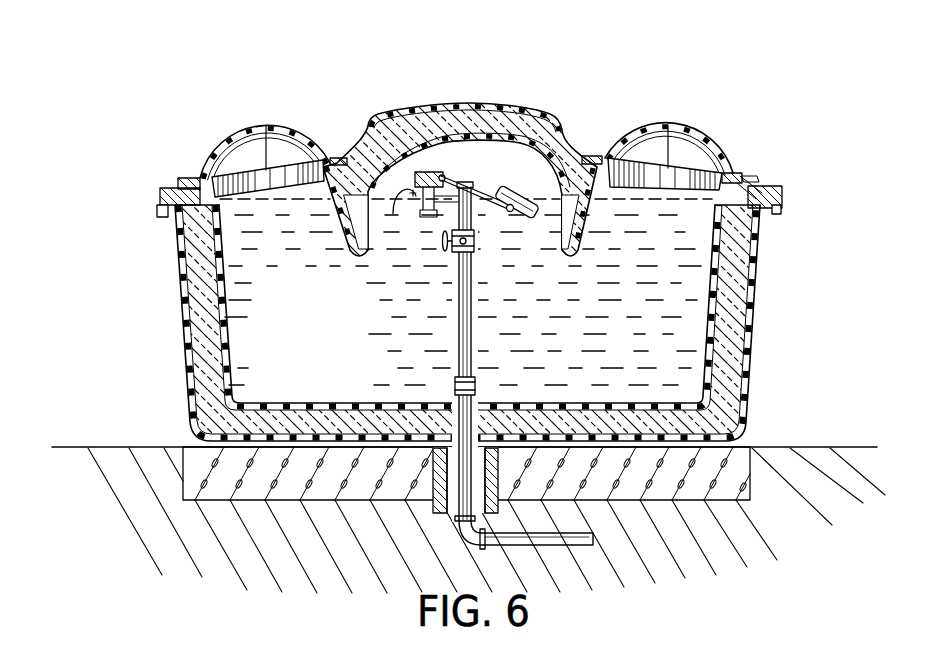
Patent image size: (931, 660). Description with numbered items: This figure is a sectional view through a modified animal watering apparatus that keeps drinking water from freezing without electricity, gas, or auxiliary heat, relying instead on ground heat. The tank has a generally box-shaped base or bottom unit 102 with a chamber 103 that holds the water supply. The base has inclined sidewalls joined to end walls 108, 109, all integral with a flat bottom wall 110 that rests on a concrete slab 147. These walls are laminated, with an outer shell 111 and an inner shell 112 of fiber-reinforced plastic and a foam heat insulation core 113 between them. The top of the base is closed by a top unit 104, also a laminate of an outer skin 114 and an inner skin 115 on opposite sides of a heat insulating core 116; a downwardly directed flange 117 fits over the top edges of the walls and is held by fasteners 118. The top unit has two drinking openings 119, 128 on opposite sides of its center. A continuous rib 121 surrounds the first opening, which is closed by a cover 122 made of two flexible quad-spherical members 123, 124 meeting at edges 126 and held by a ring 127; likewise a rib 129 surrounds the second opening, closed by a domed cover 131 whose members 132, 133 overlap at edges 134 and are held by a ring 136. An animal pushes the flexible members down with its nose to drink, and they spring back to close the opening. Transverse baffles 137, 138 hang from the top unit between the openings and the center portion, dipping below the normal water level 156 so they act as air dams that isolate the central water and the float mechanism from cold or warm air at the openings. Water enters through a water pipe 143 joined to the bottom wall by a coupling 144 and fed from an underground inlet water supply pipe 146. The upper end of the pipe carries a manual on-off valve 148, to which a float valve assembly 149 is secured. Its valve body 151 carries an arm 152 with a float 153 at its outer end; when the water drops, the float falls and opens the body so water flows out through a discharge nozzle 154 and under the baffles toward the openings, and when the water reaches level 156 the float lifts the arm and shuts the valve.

The base or bottom unit 102 is at (482, 323).
The chamber 103 is at (466, 292).
The top unit 104 is at (475, 165).
The end wall 108 is at (197, 363).
The end wall 109 is at (471, 323).
The bottom wall 110 is at (590, 401).
The outer shell 111 is at (190, 398).
The inner shell 112 is at (224, 363).
The heat insulation core 113 is at (207, 402).
The outer shell or skin 114 is at (453, 107).
The inner shell or skin 115 is at (594, 184).
The heat insulating core 116 is at (398, 137).
The flange 117 is at (158, 189).
The fasteners 118 is at (157, 210).
The drinking opening 119 is at (265, 184).
The rib 121 is at (345, 192).
The cover 122 is at (228, 156).
The quad-spherical member 123 is at (214, 149).
The quad-spherical member 124 is at (283, 122).
The overlapping or meeting edges 126 is at (258, 127).
The ring 127 is at (186, 175).
The drinking opening 128 is at (667, 177).
The rib 129 is at (733, 172).
The domed cover 131 is at (709, 135).
The quad-spherical member 132 is at (707, 140).
The quad-spherical member 133 is at (640, 123).
The overlapping edges 134 is at (678, 130).
The ring 136 is at (750, 178).
The baffle 137 is at (354, 248).
The baffle 138 is at (583, 248).
The water pipe 143 is at (503, 385).
The coupling 144 is at (476, 378).
The inlet water supply pipe 146 is at (552, 543).
The concrete slab 147 is at (690, 480).
The on-off valve 148 is at (460, 256).
The float valve assembly 149 is at (503, 225).
The valve unit or body 151 is at (466, 194).
The arm 152 is at (482, 197).
The float 153 is at (512, 188).
The discharge nozzle 154 is at (411, 197).
The normal water level 156 is at (310, 204).